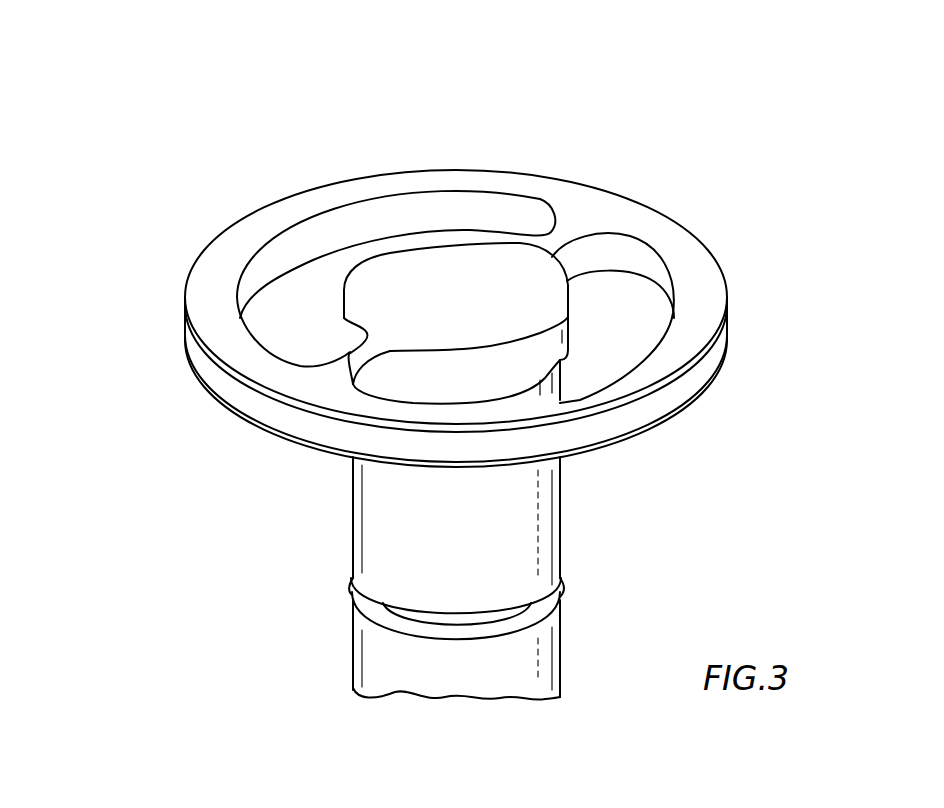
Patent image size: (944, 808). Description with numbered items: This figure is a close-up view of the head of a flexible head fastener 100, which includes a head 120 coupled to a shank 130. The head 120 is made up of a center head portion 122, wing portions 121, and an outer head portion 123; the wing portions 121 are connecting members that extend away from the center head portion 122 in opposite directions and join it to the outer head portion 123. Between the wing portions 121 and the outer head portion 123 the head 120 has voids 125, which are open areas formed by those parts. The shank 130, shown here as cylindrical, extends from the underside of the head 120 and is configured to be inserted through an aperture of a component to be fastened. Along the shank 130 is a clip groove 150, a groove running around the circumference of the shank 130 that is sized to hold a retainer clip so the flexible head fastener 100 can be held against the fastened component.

The flexible head fastener 100 is at (742, 80).
The head 120 is at (677, 462).
The wing portion 121 is at (537, 200).
The center head portion 122 is at (452, 268).
The outer head portion 123 is at (580, 196).
The void 125 is at (620, 300).
The shank 130 is at (560, 522).
The clip groove 150 is at (545, 607).